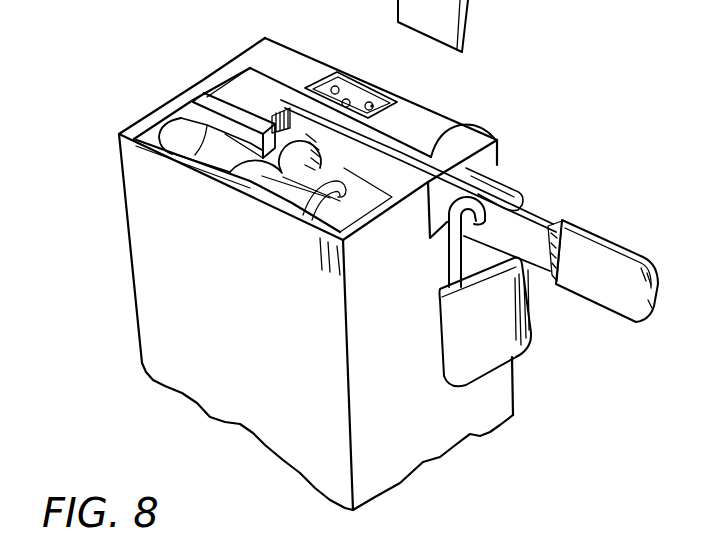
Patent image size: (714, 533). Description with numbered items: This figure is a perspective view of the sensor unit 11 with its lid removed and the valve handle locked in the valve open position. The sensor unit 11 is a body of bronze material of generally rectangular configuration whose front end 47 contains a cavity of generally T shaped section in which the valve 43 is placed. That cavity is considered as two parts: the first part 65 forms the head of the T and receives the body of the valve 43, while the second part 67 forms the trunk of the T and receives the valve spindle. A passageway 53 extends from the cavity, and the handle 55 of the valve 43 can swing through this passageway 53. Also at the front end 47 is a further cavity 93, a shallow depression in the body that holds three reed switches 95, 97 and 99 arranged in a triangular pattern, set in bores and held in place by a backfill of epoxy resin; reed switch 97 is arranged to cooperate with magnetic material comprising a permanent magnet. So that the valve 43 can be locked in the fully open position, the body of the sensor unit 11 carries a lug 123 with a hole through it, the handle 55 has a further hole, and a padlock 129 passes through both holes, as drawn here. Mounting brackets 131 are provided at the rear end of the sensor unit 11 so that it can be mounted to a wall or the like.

The sensor unit 11 is at (150, 282).
The valve 43 is at (238, 168).
The front end 47 is at (443, 100).
The passageway 53 is at (480, 123).
The handle 55 is at (547, 217).
The first part 65 is at (155, 133).
The second part 67 is at (237, 93).
The further cavity 93 is at (338, 90).
The reed switch 95 is at (347, 103).
The reed switch 97 is at (370, 106).
The reed switch 99 is at (372, 102).
The lug 123 is at (513, 190).
The padlock 129 is at (500, 347).
The mounting brackets 131 is at (469, 10).